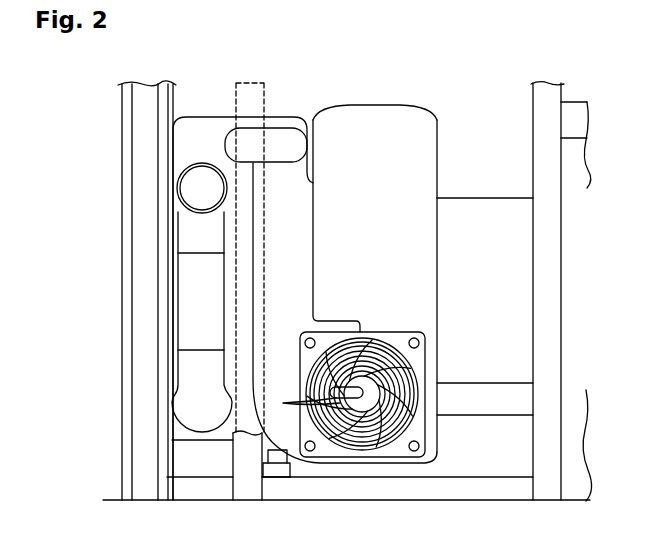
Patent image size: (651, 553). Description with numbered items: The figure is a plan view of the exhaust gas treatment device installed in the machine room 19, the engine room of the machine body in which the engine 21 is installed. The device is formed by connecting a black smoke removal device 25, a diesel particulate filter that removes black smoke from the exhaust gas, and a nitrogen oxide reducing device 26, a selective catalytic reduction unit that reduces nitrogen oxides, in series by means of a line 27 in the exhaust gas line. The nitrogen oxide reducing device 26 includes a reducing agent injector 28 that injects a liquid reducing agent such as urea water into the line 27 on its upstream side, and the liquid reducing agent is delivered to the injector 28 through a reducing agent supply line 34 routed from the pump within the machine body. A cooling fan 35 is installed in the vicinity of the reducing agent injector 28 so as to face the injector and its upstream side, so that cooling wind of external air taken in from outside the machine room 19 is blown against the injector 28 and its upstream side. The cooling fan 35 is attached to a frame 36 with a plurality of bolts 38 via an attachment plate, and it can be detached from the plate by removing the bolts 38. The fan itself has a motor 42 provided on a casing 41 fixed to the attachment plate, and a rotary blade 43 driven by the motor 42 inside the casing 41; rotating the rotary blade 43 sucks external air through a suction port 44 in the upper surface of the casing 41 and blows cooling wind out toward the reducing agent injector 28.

The machine room 19 is at (488, 117).
The engine 21 is at (488, 214).
The black smoke removal device 25 is at (377, 122).
The nitrogen oxide reducing device 26 is at (204, 133).
The line 27 is at (279, 177).
The reducing agent injector 28 is at (265, 455).
The reducing agent supply line 34 is at (290, 472).
The cooling fan 35 is at (417, 363).
The frame 36 is at (517, 493).
The bolts 38 is at (425, 458).
The casing 41 is at (327, 447).
The motor 42 is at (365, 427).
The rotary blade 43 is at (380, 437).
The suction port 44 is at (398, 448).